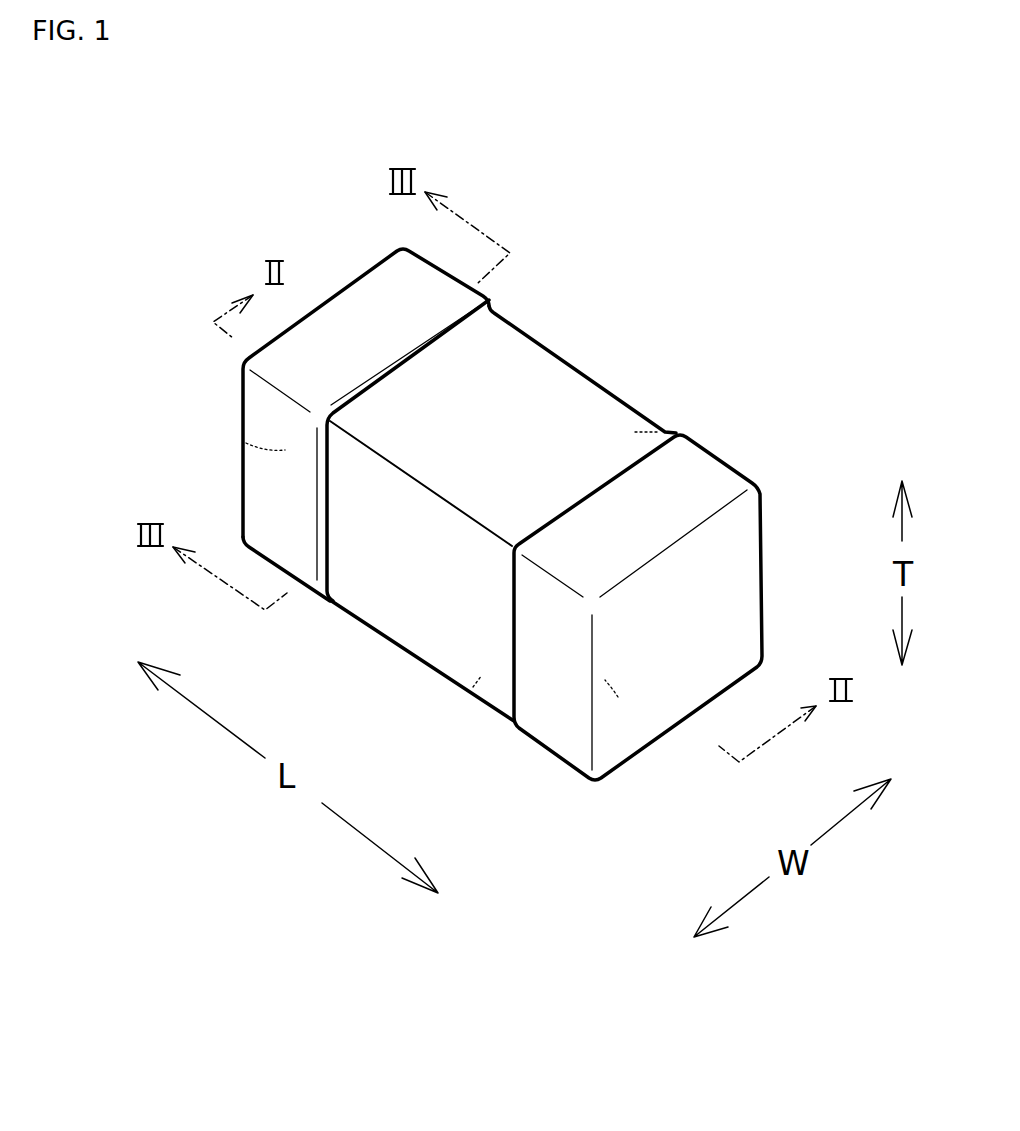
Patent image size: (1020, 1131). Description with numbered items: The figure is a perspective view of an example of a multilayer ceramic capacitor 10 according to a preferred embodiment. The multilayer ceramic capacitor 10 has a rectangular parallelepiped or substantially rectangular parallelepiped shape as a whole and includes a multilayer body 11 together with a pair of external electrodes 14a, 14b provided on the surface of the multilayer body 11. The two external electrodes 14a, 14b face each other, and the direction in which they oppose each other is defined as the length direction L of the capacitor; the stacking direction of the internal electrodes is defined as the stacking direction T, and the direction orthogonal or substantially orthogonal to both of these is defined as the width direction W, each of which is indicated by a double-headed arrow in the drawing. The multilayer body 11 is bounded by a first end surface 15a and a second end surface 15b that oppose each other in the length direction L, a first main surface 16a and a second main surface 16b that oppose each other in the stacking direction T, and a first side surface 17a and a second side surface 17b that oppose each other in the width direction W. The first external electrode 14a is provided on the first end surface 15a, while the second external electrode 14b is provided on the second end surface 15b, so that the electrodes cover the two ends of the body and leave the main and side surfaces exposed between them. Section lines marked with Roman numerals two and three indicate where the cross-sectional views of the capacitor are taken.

The multilayer ceramic capacitor 10 is at (728, 262).
The multilayer body 11 is at (557, 385).
The first external electrode 14a is at (376, 296).
The second external electrode 14b is at (708, 465).
The first end surface 15a is at (243, 445).
The second end surface 15b is at (618, 697).
The first main surface 16a is at (615, 420).
The second main surface 16b is at (473, 687).
The first side surface 17a is at (427, 615).
The second side surface 17b is at (670, 432).